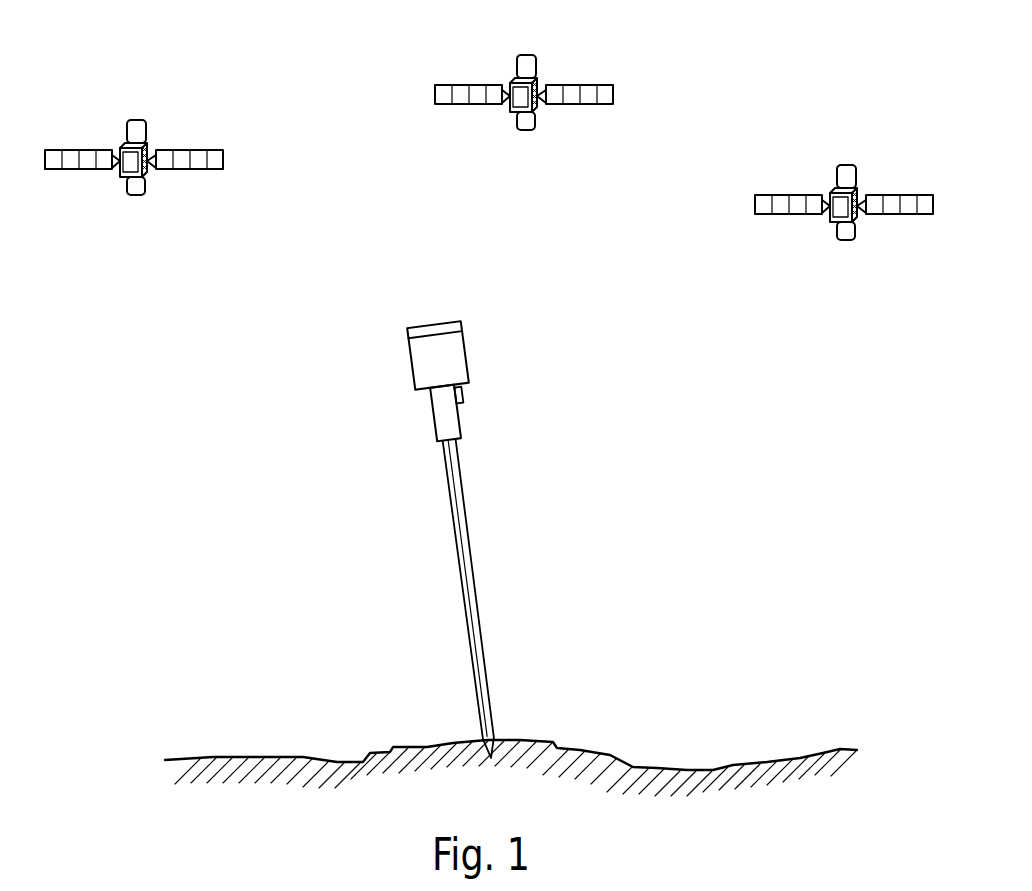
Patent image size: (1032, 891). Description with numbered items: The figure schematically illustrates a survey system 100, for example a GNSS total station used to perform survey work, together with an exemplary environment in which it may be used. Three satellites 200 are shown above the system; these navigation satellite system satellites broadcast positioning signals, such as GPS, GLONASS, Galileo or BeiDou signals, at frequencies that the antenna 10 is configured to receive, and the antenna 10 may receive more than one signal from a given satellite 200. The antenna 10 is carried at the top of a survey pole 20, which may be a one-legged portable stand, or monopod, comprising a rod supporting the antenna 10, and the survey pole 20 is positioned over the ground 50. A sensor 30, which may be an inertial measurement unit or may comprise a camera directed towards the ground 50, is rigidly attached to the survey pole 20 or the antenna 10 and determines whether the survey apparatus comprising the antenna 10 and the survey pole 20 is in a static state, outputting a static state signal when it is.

The survey system 100 is at (282, 303).
The satellite 200 is at (489, 126).
The antenna 10 is at (445, 355).
The survey pole 20 is at (474, 599).
The sensor 30 is at (492, 405).
The ground 50 is at (511, 754).